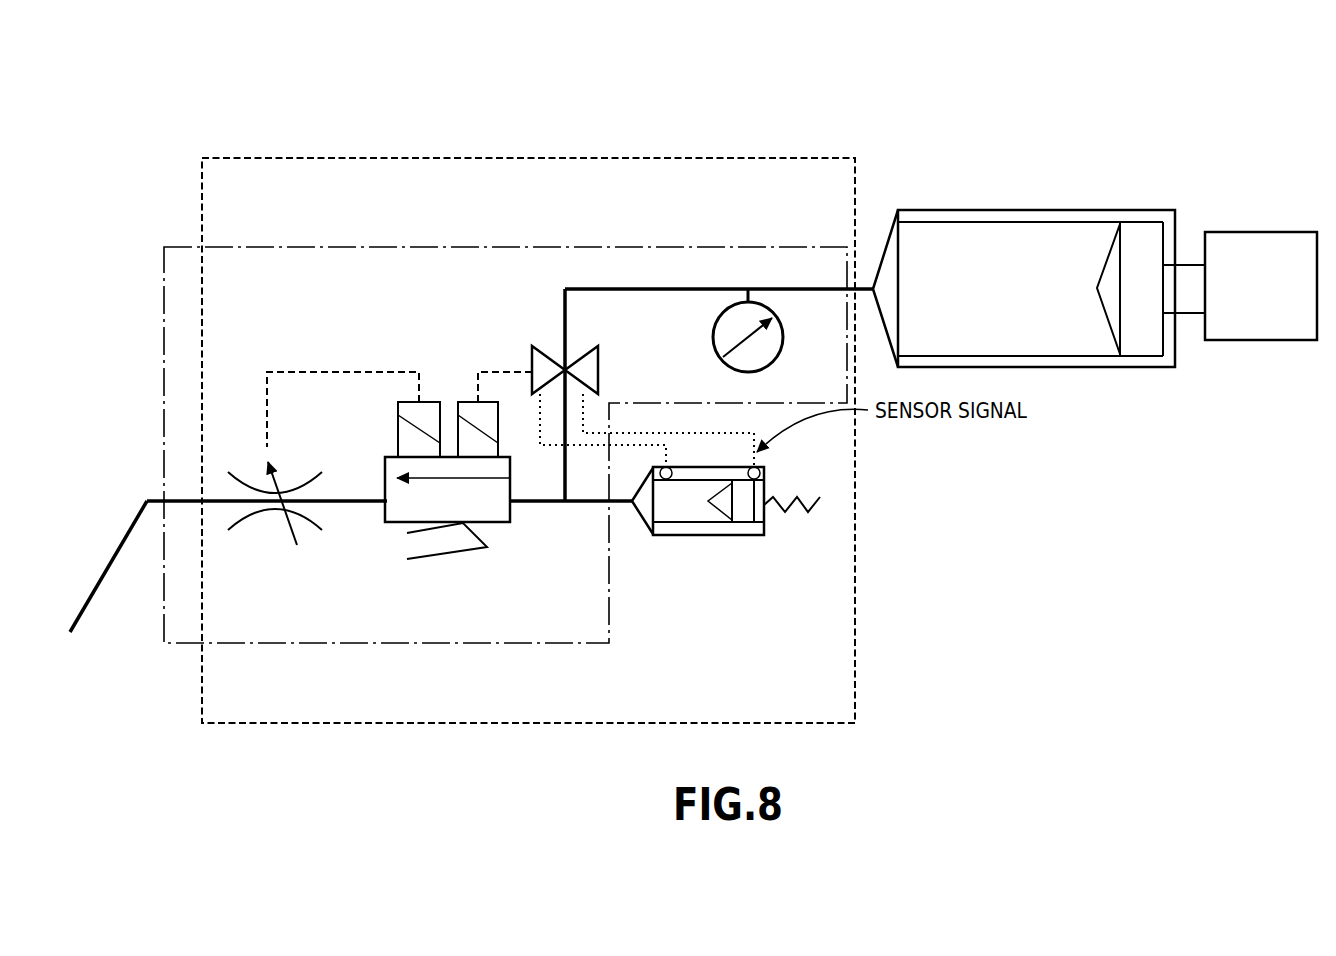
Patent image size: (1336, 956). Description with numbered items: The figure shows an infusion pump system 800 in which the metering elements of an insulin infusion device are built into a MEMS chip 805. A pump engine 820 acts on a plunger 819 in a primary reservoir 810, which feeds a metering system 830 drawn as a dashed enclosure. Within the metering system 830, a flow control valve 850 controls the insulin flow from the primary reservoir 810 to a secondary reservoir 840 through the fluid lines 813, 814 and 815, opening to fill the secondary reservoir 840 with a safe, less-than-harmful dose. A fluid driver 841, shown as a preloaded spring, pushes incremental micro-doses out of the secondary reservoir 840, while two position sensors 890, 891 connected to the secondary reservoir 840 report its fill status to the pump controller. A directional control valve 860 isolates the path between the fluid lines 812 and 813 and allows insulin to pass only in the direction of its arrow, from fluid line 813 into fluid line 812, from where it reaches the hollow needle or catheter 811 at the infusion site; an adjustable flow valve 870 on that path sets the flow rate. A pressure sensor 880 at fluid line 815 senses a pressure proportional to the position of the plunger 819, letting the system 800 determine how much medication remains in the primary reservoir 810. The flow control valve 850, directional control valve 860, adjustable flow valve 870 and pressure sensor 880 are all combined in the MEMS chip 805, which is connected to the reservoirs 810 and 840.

The infusion pump system 800 is at (165, 125).
The MEMS chip 805 is at (175, 247).
The primary reservoir 810 is at (1145, 370).
The hollow needle or catheter 811 is at (107, 575).
The fluid line 812 is at (157, 495).
The fluid line 813 is at (580, 504).
The fluid line 814 is at (562, 487).
The fluid line 815 is at (638, 289).
The plunger 819 is at (1110, 257).
The pump engine 820 is at (1300, 232).
The metering system 830 is at (803, 158).
The secondary reservoir 840 is at (765, 530).
The fluid driver 841 is at (798, 512).
The flow control valve 850 is at (598, 351).
The directional control valve 860 is at (510, 523).
The adjustable flow valve 870 is at (308, 522).
The pressure sensor 880 is at (781, 324).
The position sensor 890 is at (671, 473).
The position sensor 891 is at (761, 478).